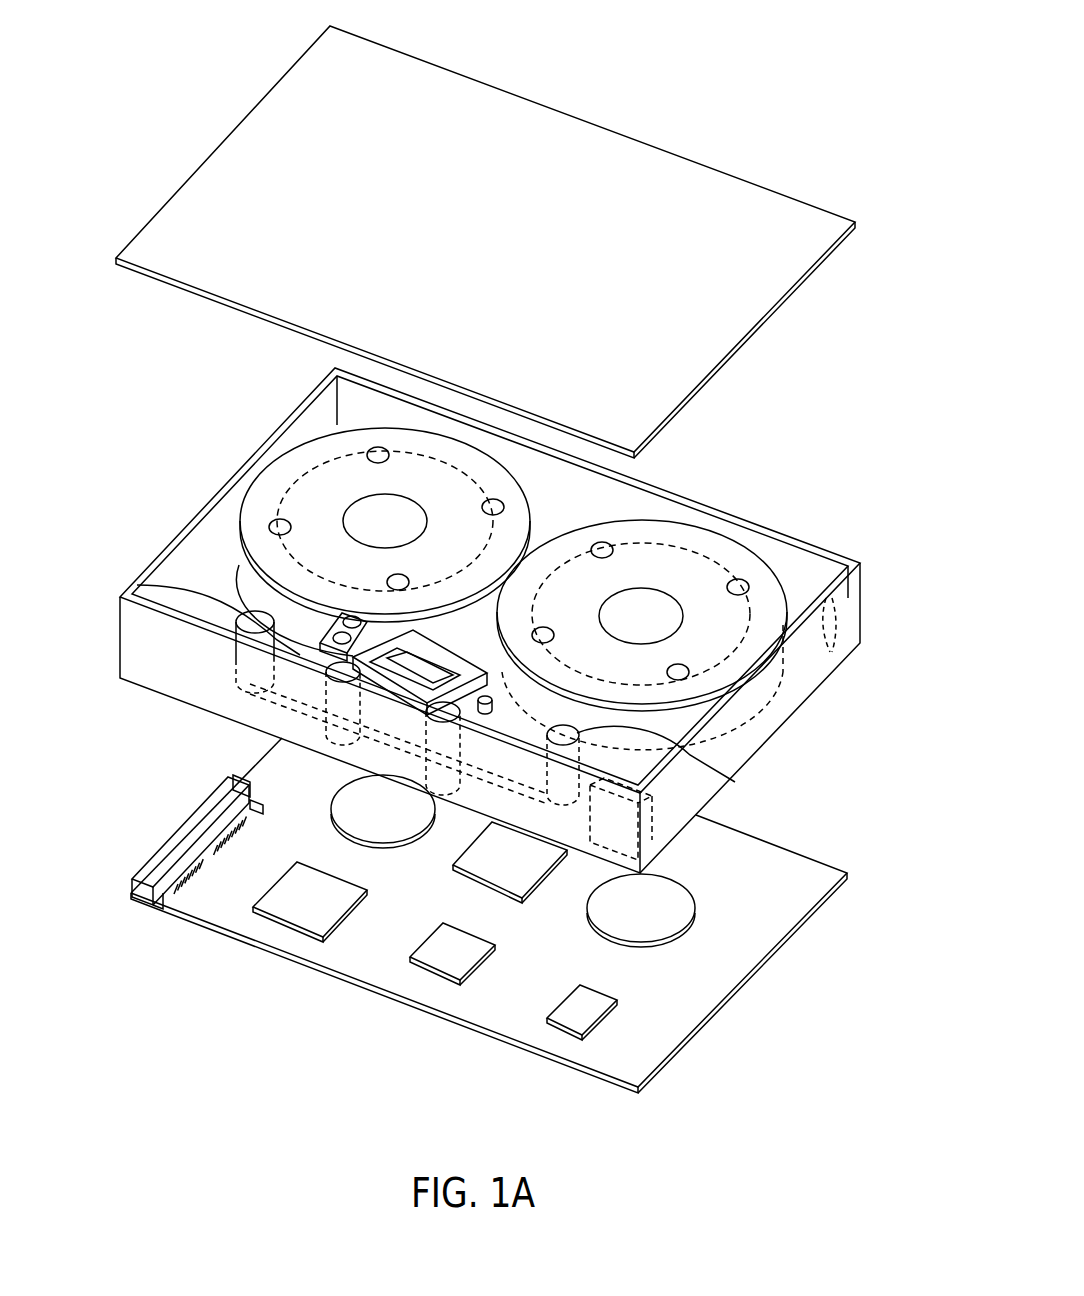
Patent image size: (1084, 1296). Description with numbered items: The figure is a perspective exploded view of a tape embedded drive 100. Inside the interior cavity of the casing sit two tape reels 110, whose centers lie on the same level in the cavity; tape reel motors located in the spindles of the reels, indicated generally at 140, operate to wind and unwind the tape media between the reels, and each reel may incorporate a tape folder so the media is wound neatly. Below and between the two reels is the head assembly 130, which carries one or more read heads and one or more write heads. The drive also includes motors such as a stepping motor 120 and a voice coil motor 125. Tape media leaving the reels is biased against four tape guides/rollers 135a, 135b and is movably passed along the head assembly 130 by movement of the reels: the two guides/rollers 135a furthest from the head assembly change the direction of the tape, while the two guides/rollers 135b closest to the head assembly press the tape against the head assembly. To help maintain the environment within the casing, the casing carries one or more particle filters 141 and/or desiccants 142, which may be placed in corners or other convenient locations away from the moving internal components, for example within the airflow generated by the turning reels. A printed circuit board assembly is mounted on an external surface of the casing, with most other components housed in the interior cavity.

The data storage device 100 is at (763, 90).
The tape reel 110 is at (446, 430).
The stepping motor 120 is at (310, 637).
The voice coil motor 125 is at (408, 636).
The head assembly 130 is at (413, 700).
The tape guides/rollers 135a is at (247, 617).
The tape guides/rollers 135b is at (336, 668).
The spindle motor 140 is at (356, 497).
The particle filter 141 is at (835, 630).
The desiccant 142 is at (665, 812).